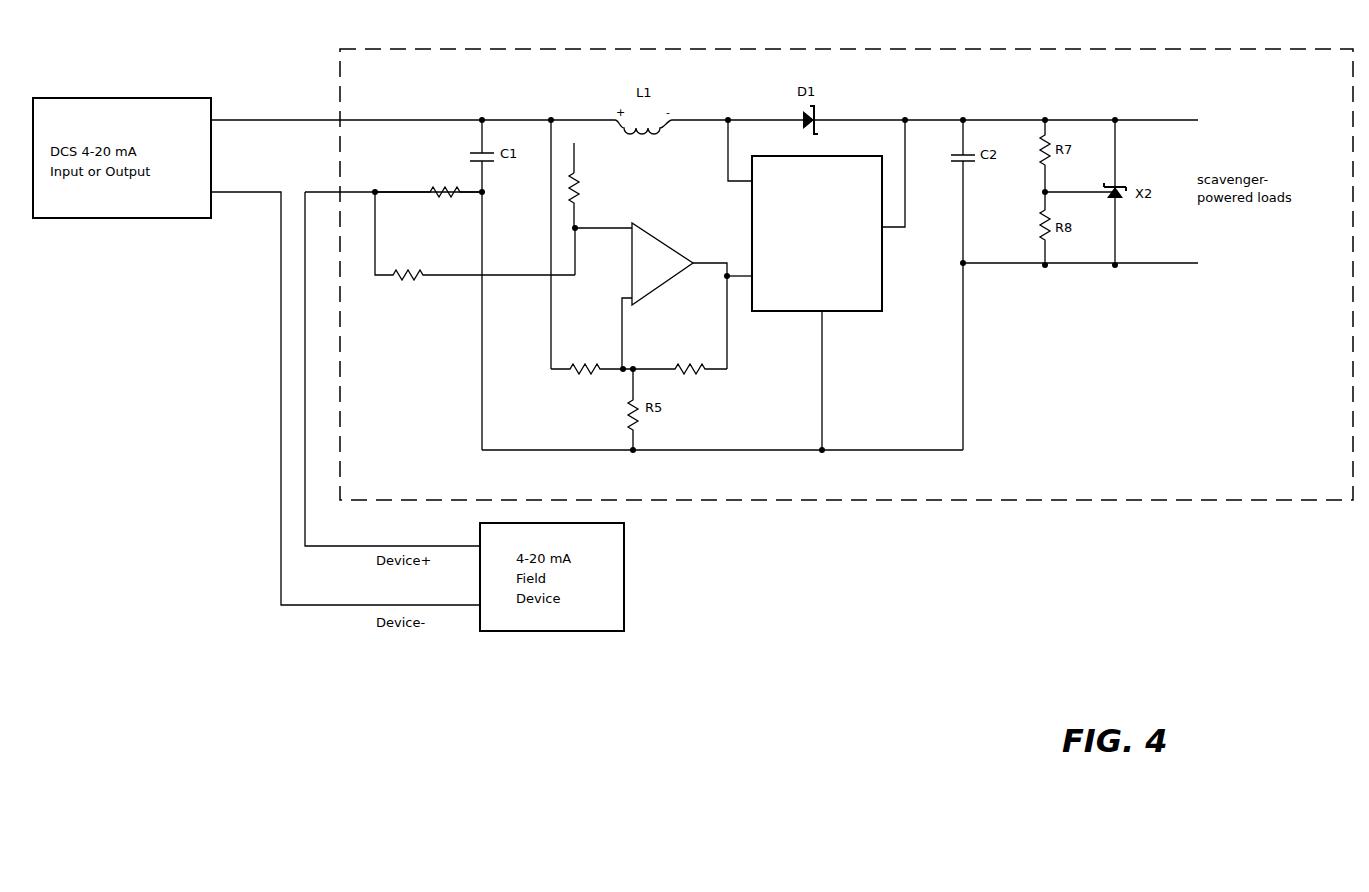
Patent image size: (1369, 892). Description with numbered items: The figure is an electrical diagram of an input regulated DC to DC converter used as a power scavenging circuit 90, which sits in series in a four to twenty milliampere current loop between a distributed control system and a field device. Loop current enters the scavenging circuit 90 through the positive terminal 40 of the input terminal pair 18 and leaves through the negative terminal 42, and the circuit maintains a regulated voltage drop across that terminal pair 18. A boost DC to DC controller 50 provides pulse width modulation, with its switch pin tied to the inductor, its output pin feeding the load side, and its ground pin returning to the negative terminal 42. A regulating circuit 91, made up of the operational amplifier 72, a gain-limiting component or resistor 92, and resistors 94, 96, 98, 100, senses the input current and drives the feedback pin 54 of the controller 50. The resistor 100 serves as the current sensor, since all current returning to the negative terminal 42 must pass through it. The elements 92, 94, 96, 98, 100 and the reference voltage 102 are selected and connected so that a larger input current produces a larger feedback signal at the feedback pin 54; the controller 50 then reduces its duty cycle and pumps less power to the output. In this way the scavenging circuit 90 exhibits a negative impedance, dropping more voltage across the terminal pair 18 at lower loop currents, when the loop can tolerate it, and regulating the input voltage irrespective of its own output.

The input terminal pair 18 is at (693, 326).
The positive terminal 40 is at (271, 117).
The negative terminal 42 is at (279, 194).
The boost DC to DC controller 50 is at (848, 317).
The feedback pin 54 is at (748, 279).
The operational amplifier 72 is at (659, 282).
The power scavenging circuit 90 is at (1042, 49).
The regulating circuit 91 is at (692, 226).
The gain-limiting component 92 is at (707, 373).
The resistor 94 is at (574, 370).
The resistor 96 is at (578, 206).
The resistor 98 is at (394, 278).
The resistor 100 is at (423, 190).
The reference voltage 102 is at (577, 163).